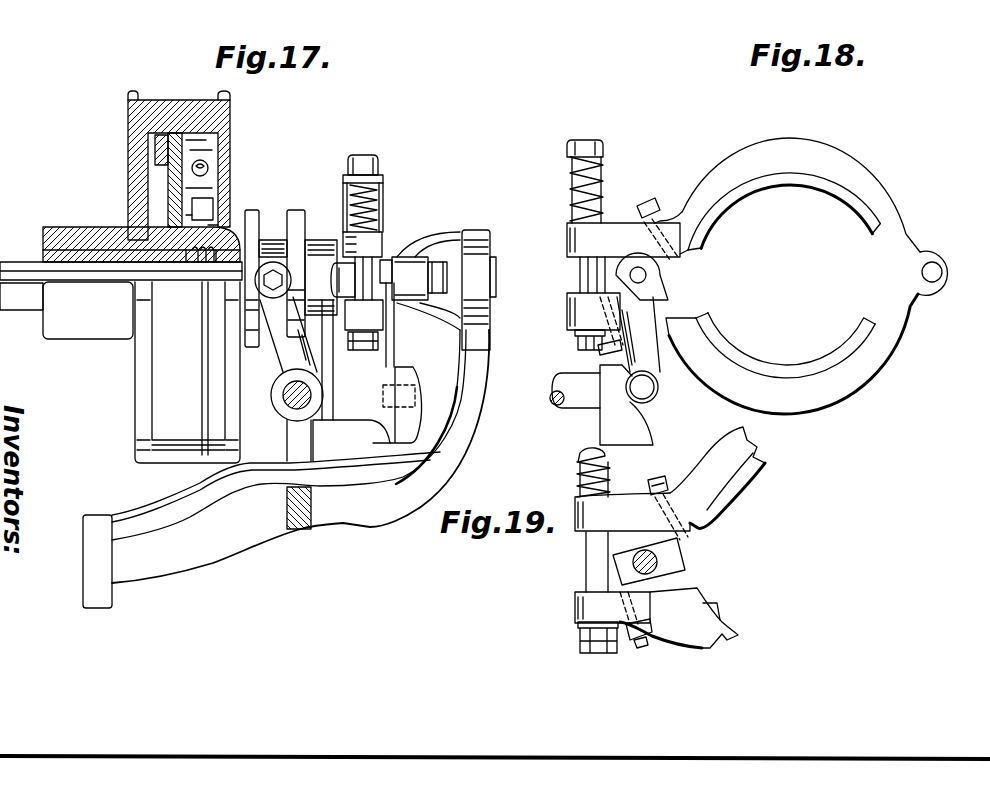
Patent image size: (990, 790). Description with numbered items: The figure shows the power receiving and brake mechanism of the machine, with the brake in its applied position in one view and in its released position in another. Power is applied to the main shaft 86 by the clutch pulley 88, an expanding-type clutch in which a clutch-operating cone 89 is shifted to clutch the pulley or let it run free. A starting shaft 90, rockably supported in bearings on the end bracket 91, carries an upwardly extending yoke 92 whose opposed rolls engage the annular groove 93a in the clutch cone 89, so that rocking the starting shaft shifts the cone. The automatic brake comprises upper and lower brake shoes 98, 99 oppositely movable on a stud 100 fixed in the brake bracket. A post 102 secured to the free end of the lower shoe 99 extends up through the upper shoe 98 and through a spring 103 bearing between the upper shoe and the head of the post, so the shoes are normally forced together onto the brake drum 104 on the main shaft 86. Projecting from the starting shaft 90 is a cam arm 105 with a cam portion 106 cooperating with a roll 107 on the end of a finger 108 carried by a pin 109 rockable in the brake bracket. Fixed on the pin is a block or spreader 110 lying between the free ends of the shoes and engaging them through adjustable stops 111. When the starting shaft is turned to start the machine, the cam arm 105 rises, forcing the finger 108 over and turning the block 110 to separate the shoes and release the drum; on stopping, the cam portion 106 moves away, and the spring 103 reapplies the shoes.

In FIG. 17, the main shaft 86 is at (17, 275).
In FIG. 17, the clutch pulley 88 is at (195, 432).
In FIG. 17, the clutch-operating member or cone 89 is at (236, 234).
In FIG. 17, the starting shaft 90 is at (290, 405).
In FIG. 17, the end bracket 91 is at (208, 565).
In FIG. 17, the yoke 92 is at (280, 340).
In FIG. 17, the annular groove 93a is at (270, 240).
In FIG. 18, the upper brake shoe 98 is at (785, 148).
In FIG. 19, the upper brake shoe 98 is at (735, 455).
In FIG. 18, the lower brake shoe 99 is at (826, 388).
In FIG. 19, the lower brake shoe 99 is at (703, 630).
In FIG. 18, the stud 100 is at (932, 262).
In FIG. 17, the post 102 is at (358, 292).
In FIG. 18, the post 102 is at (590, 272).
In FIG. 19, the post 102 is at (592, 554).
In FIG. 17, the spring 103 is at (380, 205).
In FIG. 18, the spring 103 is at (577, 188).
In FIG. 19, the spring 103 is at (582, 470).
In FIG. 17, the brake drum 104 is at (380, 183).
In FIG. 17, the cam arm 105 is at (357, 412).
In FIG. 18, the cam arm 105 is at (587, 396).
In FIG. 17, the cam portion 106 is at (405, 425).
In FIG. 18, the cam portion 106 is at (640, 430).
In FIG. 17, the roll 107 is at (415, 393).
In FIG. 18, the roll 107 is at (652, 395).
In FIG. 17, the finger 108 is at (395, 348).
In FIG. 18, the finger 108 is at (658, 372).
In FIG. 17, the pin 109 is at (428, 255).
In FIG. 18, the pin 109 is at (647, 273).
In FIG. 19, the pin 109 is at (660, 572).
In FIG. 17, the block or spreader 110 is at (385, 262).
In FIG. 18, the block or spreader 110 is at (668, 285).
In FIG. 19, the block or spreader 110 is at (668, 553).
In FIG. 18, the adjustable abutments or stops 111 is at (652, 204).
In FIG. 19, the adjustable abutments or stops 111 is at (688, 538).